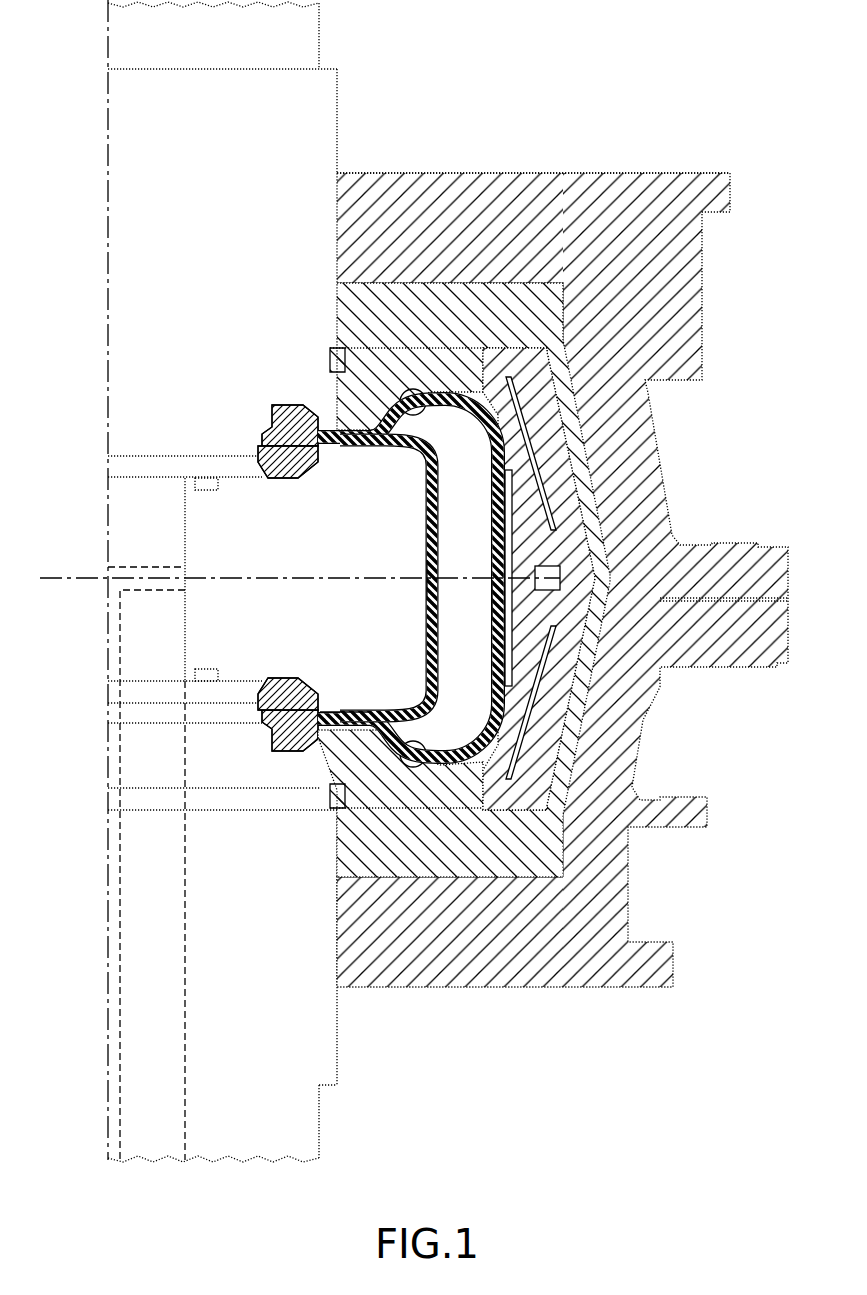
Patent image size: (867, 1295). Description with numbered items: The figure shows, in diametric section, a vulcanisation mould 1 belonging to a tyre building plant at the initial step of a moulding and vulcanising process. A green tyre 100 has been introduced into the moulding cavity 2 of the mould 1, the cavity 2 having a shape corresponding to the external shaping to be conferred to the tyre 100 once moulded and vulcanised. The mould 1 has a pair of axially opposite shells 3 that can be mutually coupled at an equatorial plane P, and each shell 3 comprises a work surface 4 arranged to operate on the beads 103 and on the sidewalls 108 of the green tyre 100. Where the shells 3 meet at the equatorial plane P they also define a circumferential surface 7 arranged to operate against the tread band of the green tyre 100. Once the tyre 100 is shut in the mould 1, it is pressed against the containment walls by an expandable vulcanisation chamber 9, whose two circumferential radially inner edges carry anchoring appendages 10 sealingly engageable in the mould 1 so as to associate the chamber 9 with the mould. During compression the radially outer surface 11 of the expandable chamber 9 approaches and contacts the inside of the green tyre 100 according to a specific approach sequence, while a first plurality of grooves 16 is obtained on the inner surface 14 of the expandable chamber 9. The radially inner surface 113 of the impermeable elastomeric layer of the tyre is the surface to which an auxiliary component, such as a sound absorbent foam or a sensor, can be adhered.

The vulcanisation mould 1 is at (712, 55).
The moulding cavity 2 is at (395, 578).
The shells 3 is at (503, 335).
The work surface 4 is at (395, 395).
The circumferential surface 7 is at (490, 588).
The expandable vulcanisation chamber 9 is at (420, 497).
The anchoring appendages 10 is at (183, 582).
The radially outer surface 11 is at (445, 483).
The inner surface 14 is at (427, 567).
The first plurality of grooves 16 is at (350, 717).
The green tyre 100 is at (480, 520).
The beads 103 is at (337, 372).
The sidewalls 108 is at (388, 430).
The radially inner surface 113 is at (548, 572).
The equatorial plane P is at (75, 578).